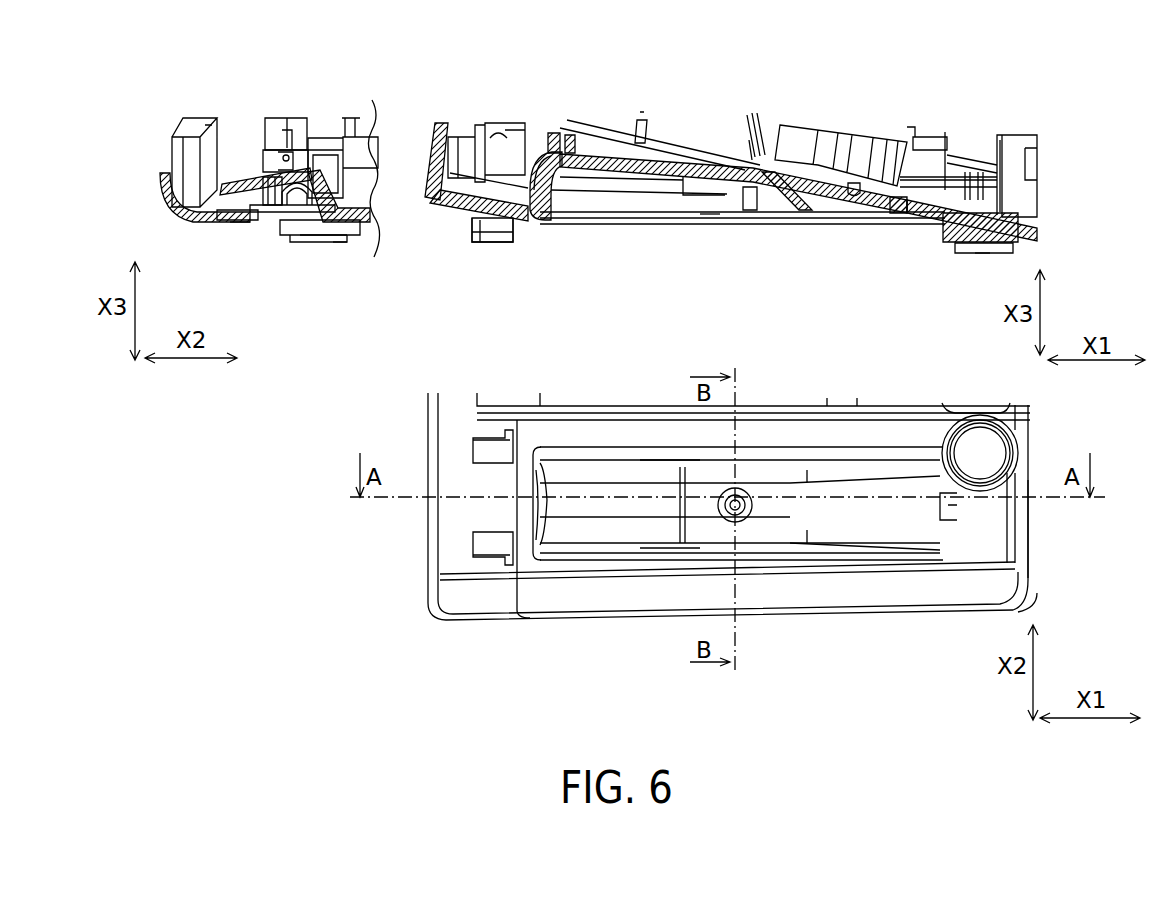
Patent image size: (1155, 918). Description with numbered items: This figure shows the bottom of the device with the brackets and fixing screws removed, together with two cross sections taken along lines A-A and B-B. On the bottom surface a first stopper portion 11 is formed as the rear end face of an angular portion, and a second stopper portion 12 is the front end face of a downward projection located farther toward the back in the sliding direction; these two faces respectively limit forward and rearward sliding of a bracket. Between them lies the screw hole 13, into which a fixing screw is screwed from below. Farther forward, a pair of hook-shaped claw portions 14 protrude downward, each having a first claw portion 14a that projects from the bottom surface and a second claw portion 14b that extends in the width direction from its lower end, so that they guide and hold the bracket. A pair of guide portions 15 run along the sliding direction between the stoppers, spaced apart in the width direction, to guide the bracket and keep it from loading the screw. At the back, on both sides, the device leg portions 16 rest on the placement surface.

The first stopper portion 11 is at (572, 170).
The second stopper portion 12 is at (950, 212).
The screw hole 13 is at (260, 155).
The claw portion 14 is at (490, 450).
The first claw portion 14a is at (480, 222).
The second claw portion 14b is at (498, 240).
The guide portion 15 is at (230, 223).
The device leg portion 16 is at (332, 242).